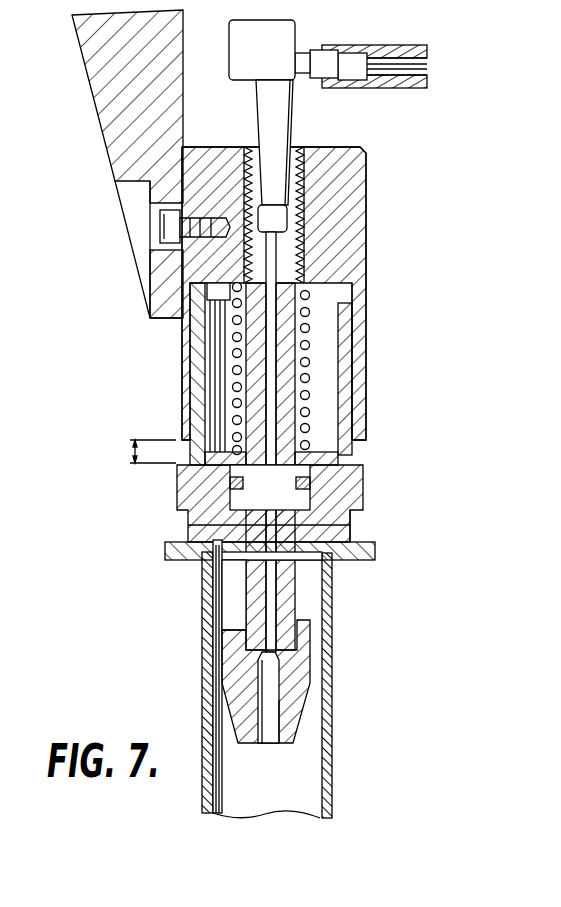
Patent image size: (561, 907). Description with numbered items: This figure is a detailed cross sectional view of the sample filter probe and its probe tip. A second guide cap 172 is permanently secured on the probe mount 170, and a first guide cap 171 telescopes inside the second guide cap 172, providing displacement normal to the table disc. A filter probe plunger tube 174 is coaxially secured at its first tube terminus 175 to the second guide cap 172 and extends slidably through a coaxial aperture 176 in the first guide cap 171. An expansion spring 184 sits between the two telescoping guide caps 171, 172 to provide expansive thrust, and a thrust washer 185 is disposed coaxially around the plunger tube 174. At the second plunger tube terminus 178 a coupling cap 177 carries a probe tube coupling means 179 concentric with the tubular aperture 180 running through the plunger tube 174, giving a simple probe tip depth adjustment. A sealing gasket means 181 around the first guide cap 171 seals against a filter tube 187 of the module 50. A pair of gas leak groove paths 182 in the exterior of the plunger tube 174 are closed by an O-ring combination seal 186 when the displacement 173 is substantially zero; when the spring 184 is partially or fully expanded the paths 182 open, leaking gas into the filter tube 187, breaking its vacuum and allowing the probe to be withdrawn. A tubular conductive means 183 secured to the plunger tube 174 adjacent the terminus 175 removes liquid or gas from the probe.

The module 50 is at (160, 554).
The probe mount 170 is at (98, 73).
The first guide cap 171 is at (352, 491).
The second guide cap 172 is at (350, 219).
The displacement 173 is at (130, 456).
The filter probe plunger tube 174 is at (302, 318).
The first tube terminus 175 is at (298, 145).
The coaxial aperture 176 is at (352, 469).
The coupling cap 177 is at (295, 654).
The second plunger tube terminus 178 is at (307, 620).
The probe tube coupling means 179 is at (262, 702).
The tubular aperture 180 is at (268, 610).
The sealing gasket means 181 is at (366, 519).
The gas leak groove paths 182 is at (188, 518).
The tubular conductive means 183 is at (283, 33).
The expansion spring 184 is at (232, 355).
The thrust washer 185 is at (228, 452).
The O-ring combination seal 186 is at (230, 482).
The filter tube 187 is at (328, 703).